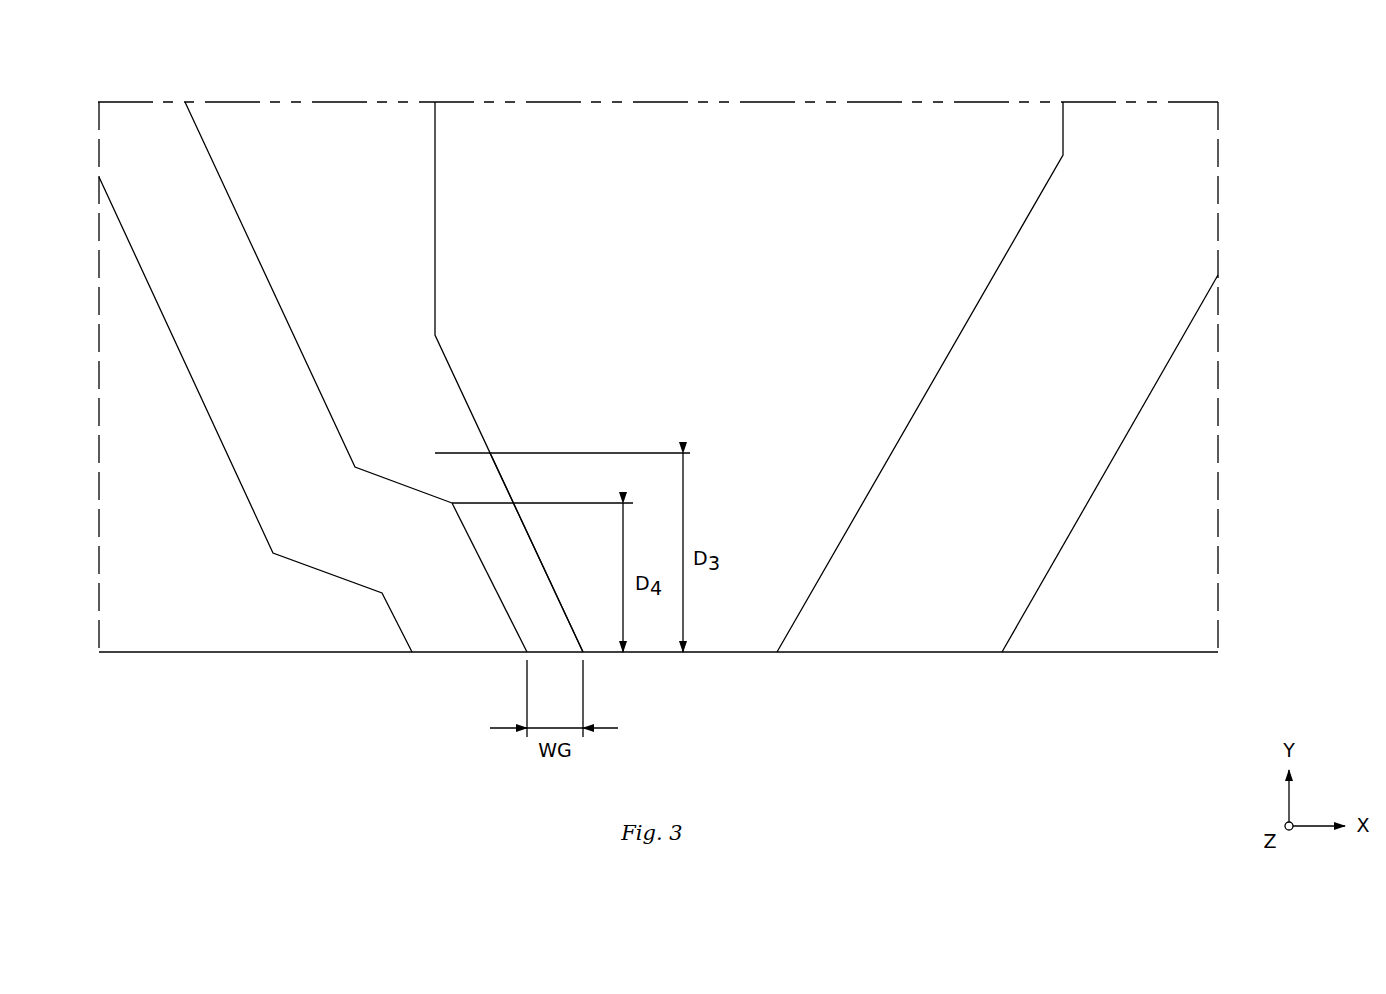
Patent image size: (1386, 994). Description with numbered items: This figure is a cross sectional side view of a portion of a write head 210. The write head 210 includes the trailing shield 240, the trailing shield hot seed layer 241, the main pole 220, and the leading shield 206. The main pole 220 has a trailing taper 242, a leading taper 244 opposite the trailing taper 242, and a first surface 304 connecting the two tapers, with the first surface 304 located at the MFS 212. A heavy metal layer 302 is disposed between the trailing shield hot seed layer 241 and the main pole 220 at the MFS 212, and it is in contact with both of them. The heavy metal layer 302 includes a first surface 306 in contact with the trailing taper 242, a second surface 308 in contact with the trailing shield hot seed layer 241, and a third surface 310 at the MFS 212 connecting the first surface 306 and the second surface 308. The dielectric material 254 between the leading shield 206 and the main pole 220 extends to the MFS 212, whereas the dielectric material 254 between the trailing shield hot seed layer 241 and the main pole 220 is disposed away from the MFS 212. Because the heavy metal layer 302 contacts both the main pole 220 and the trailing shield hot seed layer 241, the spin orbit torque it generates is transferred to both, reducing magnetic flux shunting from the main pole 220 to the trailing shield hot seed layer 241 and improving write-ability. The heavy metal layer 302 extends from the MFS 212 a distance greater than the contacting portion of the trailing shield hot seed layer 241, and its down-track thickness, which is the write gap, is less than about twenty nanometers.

The write head 210 is at (1113, 45).
The leading shield 206 is at (1141, 627).
The MFS 212 is at (1060, 653).
The main pole 220 is at (672, 247).
The trailing shield 240 is at (185, 627).
The trailing shield hot seed layer 241 is at (168, 247).
The trailing taper 242 is at (457, 382).
The leading taper 244 is at (950, 352).
The dielectric material 254 is at (323, 247).
The heavy metal layer 302 is at (515, 590).
The first surface 304 is at (722, 653).
The first surface 306 is at (526, 529).
The second surface 308 is at (482, 563).
The third surface 310 is at (542, 655).